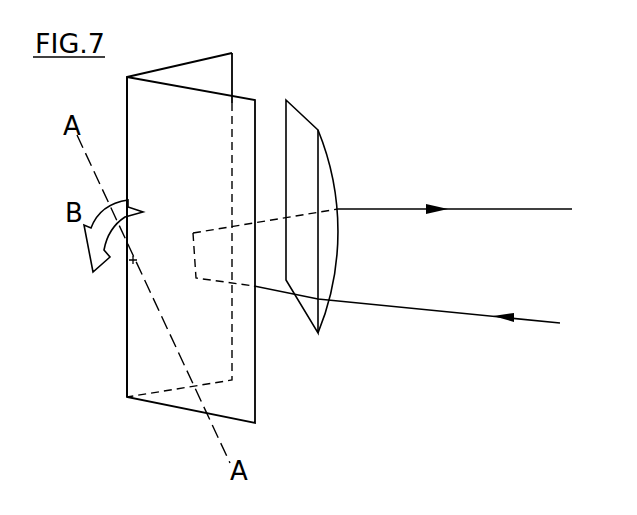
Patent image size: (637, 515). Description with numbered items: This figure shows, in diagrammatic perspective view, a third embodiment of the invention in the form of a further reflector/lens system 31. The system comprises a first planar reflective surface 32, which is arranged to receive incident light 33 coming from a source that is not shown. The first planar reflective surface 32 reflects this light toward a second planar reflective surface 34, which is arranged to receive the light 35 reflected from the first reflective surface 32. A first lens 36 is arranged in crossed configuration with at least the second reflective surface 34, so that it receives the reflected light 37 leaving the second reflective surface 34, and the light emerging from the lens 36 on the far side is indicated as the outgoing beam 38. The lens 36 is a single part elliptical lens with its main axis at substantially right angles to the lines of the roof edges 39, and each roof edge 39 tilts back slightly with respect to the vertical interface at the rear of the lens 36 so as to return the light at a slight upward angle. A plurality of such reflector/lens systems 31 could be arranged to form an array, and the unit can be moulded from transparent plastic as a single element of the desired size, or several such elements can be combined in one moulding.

The reflector/lens system 31 is at (101, 340).
The first planar reflective surface 32 is at (238, 98).
The incident light 33 is at (447, 310).
The second planar reflective surface 34 is at (215, 70).
The reflected light from first reflective surface 35 is at (193, 233).
The first lens 36 is at (308, 132).
The reflected light from second reflective surface 37 is at (268, 216).
The emergent light beam 38 is at (470, 208).
The roof edge 39 is at (127, 123).